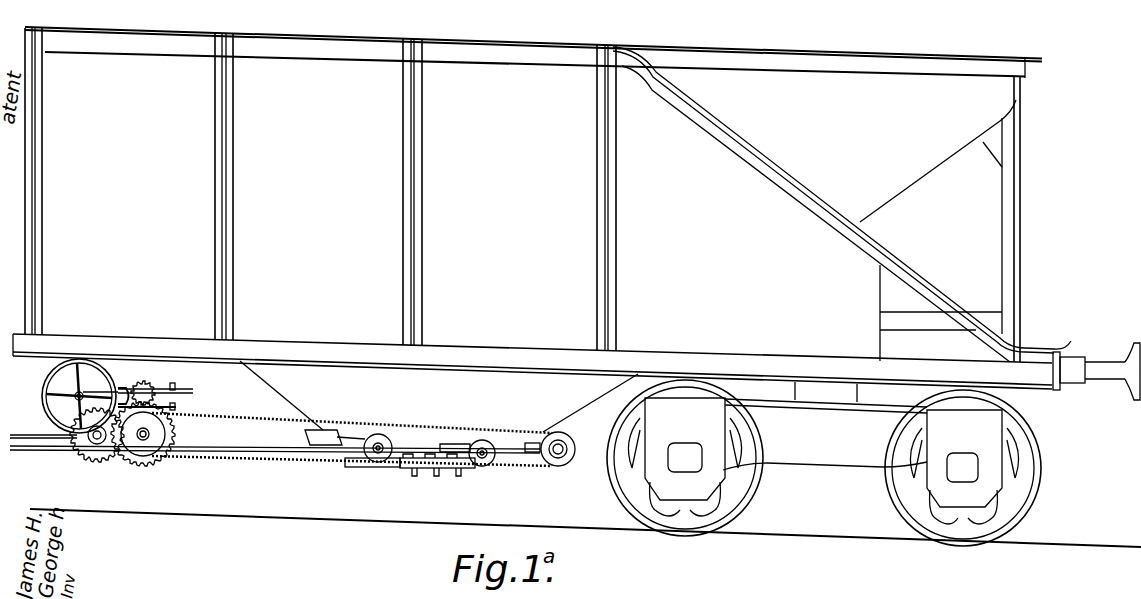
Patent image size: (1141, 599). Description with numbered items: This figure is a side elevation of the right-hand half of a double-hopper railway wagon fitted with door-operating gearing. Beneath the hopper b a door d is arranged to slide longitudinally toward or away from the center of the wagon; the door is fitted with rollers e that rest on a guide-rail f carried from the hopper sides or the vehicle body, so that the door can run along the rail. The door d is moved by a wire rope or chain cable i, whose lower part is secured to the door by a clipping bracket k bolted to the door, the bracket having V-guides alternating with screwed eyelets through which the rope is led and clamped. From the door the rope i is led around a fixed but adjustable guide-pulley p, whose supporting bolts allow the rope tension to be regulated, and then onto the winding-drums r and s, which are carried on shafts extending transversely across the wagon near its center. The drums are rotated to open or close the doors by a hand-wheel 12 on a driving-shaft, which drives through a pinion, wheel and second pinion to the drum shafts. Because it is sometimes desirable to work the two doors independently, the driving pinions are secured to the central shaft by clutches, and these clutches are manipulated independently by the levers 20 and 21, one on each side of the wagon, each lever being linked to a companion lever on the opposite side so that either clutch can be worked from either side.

The hand-wheel 12 is at (44, 392).
The clutch lever 20 is at (193, 391).
The clutch lever 21 is at (176, 407).
The winding-drum r is at (87, 446).
The winding-drum s is at (140, 449).
The guide-rail f is at (257, 453).
The wire rope or chain cable i is at (337, 428).
The hopper b is at (422, 403).
The roller e is at (382, 437).
The door d is at (447, 448).
The bracket k is at (427, 476).
The guide-pulley p is at (562, 463).